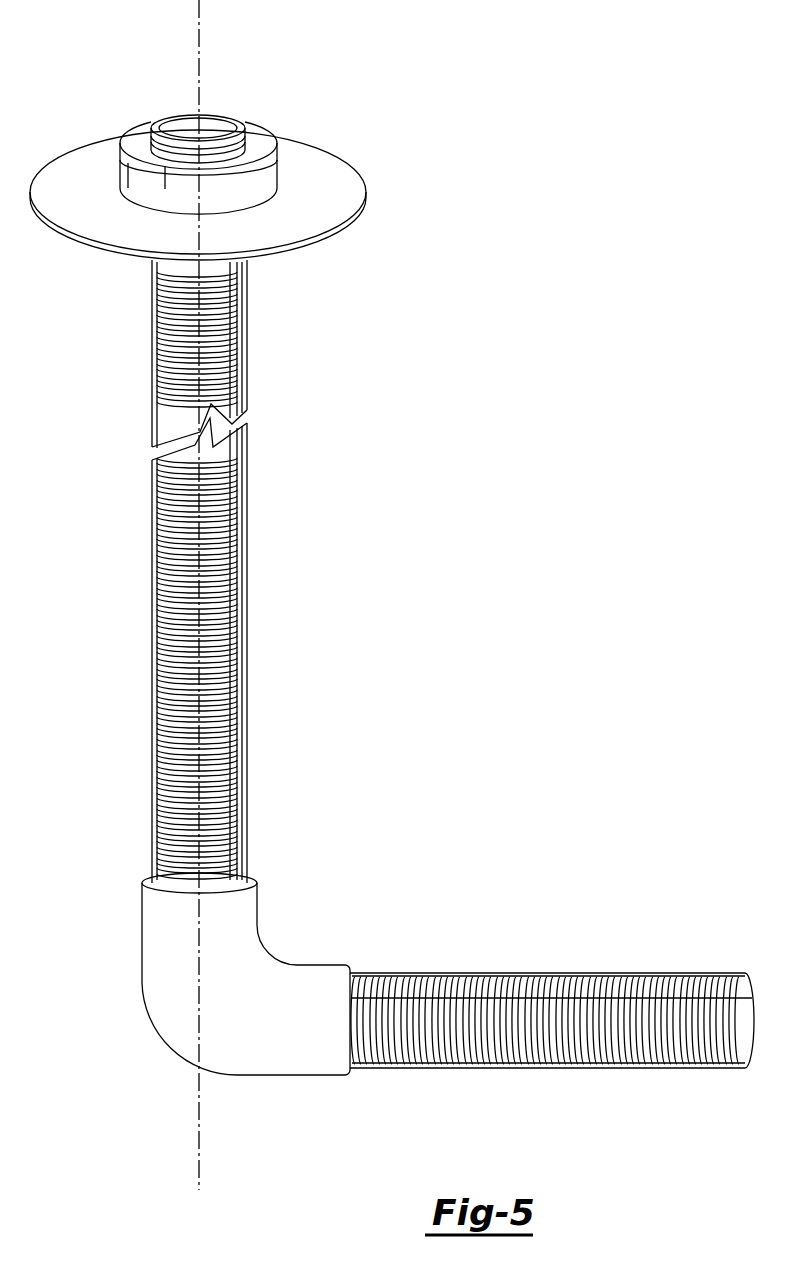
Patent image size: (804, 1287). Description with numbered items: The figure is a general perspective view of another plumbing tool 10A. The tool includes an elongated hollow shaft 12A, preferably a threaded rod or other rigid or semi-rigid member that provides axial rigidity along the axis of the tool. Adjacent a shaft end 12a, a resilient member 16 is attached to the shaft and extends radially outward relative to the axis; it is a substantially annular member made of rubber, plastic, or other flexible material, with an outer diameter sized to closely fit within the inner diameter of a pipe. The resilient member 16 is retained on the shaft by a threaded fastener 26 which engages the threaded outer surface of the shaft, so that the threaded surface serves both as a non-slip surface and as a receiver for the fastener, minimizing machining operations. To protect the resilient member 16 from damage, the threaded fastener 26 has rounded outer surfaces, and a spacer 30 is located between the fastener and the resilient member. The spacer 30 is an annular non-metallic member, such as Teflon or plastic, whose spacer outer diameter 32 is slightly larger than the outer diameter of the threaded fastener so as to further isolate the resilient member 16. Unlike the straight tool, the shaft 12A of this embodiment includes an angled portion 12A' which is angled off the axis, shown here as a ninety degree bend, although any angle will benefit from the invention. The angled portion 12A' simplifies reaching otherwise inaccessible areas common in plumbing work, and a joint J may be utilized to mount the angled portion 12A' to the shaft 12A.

The plumbing tool 10A is at (503, 357).
The elongated hollow shaft 12A is at (239, 571).
The angled portion 12A' is at (552, 1000).
The shaft end 12a is at (215, 118).
The resilient member 16 is at (304, 228).
The threaded fastener 26 is at (243, 116).
The spacer 30 is at (212, 168).
The spacer outer diameter 32 is at (121, 185).
The joint J is at (292, 1048).